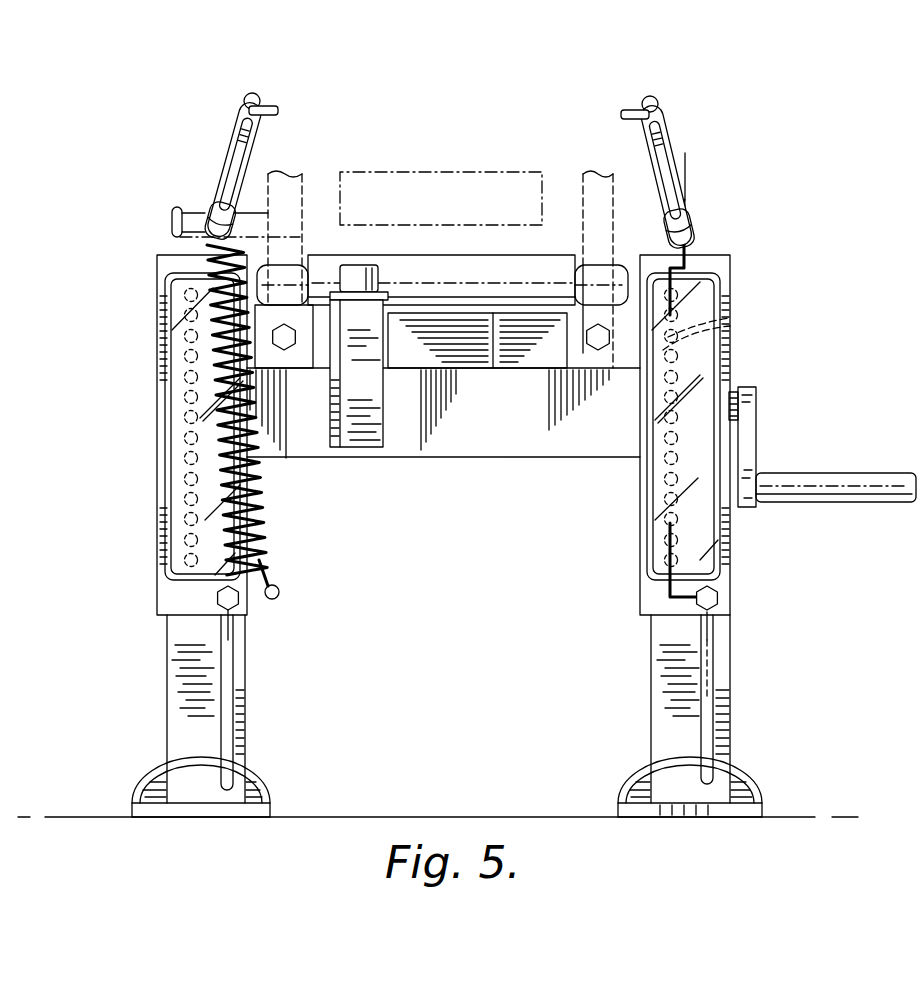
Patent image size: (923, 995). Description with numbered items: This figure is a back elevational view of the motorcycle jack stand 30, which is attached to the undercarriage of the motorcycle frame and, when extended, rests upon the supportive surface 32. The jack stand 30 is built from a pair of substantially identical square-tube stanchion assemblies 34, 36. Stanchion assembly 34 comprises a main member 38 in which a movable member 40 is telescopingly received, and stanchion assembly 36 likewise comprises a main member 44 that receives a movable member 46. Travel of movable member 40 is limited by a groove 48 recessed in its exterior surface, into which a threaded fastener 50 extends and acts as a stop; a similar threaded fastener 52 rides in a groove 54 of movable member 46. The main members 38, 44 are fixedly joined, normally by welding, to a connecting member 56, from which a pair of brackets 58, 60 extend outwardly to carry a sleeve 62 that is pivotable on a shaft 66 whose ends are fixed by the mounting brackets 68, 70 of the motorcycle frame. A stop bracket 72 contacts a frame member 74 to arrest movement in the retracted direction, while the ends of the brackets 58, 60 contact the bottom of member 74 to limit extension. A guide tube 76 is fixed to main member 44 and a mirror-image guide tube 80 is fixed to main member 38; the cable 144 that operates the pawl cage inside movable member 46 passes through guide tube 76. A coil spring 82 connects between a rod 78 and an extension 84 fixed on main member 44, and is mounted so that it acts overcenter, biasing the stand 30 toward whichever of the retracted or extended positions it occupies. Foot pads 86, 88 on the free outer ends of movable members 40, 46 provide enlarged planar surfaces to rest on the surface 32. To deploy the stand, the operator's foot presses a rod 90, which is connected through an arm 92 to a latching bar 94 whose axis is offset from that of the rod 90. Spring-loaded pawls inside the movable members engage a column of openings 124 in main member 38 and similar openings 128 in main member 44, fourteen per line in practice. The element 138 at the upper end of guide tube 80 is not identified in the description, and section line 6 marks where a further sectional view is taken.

The motorcycle jack stand 30 is at (499, 444).
The supportive surface 32 is at (408, 815).
The stanchion assembly 34 is at (693, 508).
The stanchion assembly 36 is at (198, 536).
The main member 38 is at (691, 407).
The movable member 40 is at (689, 707).
The main member 44 is at (166, 435).
The movable member 46 is at (200, 709).
The groove 48 is at (714, 720).
The threaded fastener 50 is at (716, 594).
The threaded fastener 52 is at (240, 603).
The groove 54 is at (226, 752).
The connecting member 56 is at (546, 447).
The bracket 58 is at (510, 346).
The bracket 60 is at (325, 313).
The sleeve 62 is at (483, 270).
The shaft 66 is at (620, 278).
The mounting bracket 68 is at (601, 186).
The mounting bracket 70 is at (290, 172).
The stop bracket 72 is at (376, 446).
The member 74 is at (486, 186).
The guide tube 76 is at (224, 148).
The rod 78 is at (186, 208).
The guide tube 80 is at (666, 128).
The coil spring 82 is at (272, 510).
The extension 84 is at (281, 590).
The foot pad 86 is at (632, 768).
The foot pad 88 is at (152, 762).
The rod 90 is at (846, 480).
The arm 92 is at (758, 446).
The latching bar 94 is at (740, 406).
The opening 124 is at (732, 326).
The opening 128 is at (172, 393).
The right stop pin 138 is at (630, 110).
The cable 144 is at (266, 108).
The section line 6- 6 is at (690, 166).